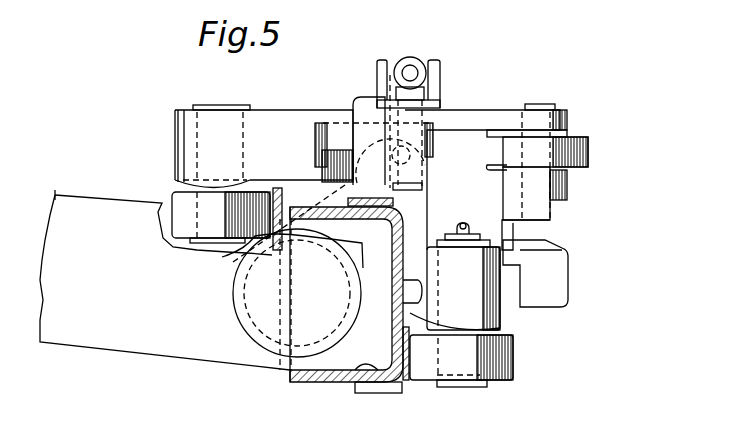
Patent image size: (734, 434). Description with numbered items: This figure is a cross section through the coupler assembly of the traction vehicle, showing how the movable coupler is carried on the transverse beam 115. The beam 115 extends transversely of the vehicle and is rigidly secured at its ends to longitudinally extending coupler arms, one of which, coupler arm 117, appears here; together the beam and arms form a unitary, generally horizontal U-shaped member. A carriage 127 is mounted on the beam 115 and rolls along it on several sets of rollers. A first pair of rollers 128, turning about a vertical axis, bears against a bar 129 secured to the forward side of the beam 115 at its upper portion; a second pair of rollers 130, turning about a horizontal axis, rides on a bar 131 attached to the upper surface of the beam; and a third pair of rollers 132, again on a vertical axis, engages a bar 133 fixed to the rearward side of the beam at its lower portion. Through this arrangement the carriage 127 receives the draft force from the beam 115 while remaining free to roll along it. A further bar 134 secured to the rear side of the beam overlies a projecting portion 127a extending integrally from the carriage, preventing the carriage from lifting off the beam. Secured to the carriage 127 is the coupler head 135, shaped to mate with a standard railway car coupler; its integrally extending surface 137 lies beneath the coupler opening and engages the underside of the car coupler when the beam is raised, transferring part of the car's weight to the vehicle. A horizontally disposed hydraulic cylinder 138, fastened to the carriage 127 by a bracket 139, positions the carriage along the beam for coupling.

The beam 115 is at (352, 378).
The coupler arm 117 is at (122, 350).
The carriage 127 is at (290, 110).
The projecting portion 127a is at (512, 338).
The first pair of rollers 128 is at (175, 200).
The bar 129 is at (242, 254).
The second pair of rollers 130 is at (367, 97).
The bar 131 is at (400, 204).
The third pair of rollers 132 is at (512, 363).
The bar 133 is at (406, 382).
The bar 134 is at (412, 290).
The coupler head 135 is at (477, 113).
The integrally extending surface 137 is at (552, 254).
The hydraulic cylinder 138 is at (413, 57).
The bracket 139 is at (441, 72).